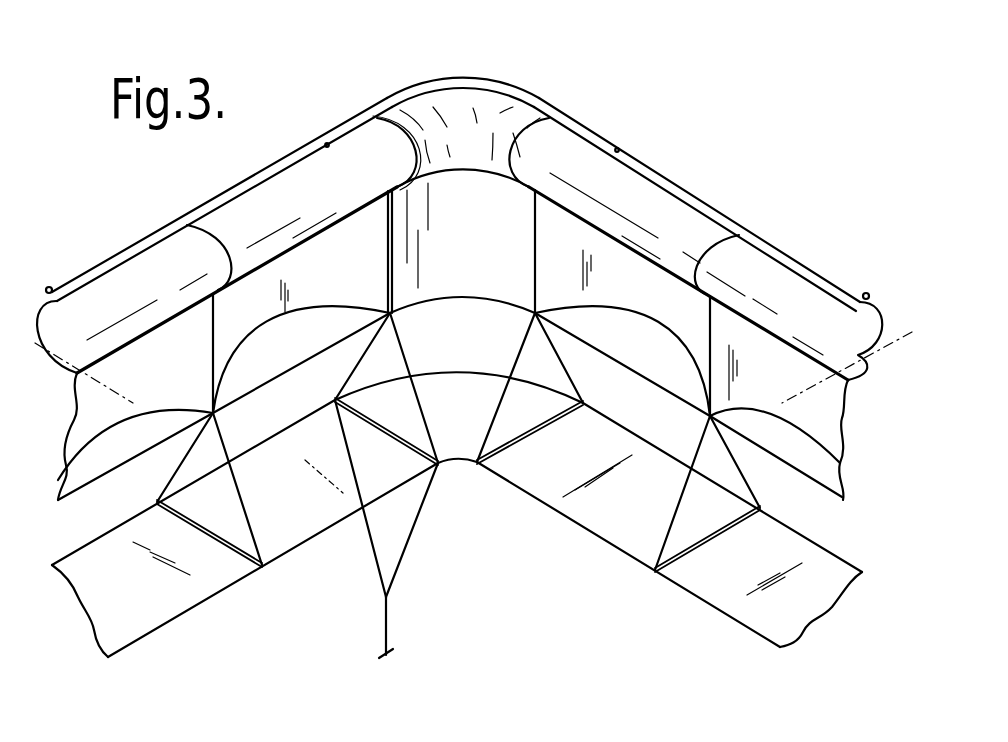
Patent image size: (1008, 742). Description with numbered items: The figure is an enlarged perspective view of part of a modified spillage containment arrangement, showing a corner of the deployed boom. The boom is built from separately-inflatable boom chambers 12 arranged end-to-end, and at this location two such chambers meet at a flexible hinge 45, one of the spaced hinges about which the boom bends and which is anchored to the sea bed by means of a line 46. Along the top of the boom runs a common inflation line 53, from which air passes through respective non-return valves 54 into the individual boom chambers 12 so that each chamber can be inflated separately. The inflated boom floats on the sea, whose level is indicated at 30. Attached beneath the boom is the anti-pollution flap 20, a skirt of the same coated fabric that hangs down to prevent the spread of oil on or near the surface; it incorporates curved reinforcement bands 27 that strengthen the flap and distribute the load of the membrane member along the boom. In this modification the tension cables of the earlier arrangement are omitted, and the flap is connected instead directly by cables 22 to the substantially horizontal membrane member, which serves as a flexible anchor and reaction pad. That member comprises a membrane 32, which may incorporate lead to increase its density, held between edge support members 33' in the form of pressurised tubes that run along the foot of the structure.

The boom chamber 12 is at (457, 207).
The flexible hinge 45 is at (462, 108).
The common inflation line 53 is at (258, 173).
The non-return valve 54 is at (628, 158).
The anti-pollution flap 20 is at (462, 197).
The cable 22 is at (402, 349).
The curved reinforcement band 27 is at (630, 317).
The sea level 30 is at (108, 384).
The edge support member 33' is at (416, 528).
The membrane 32 is at (633, 518).
The anchoring line 46 is at (386, 633).